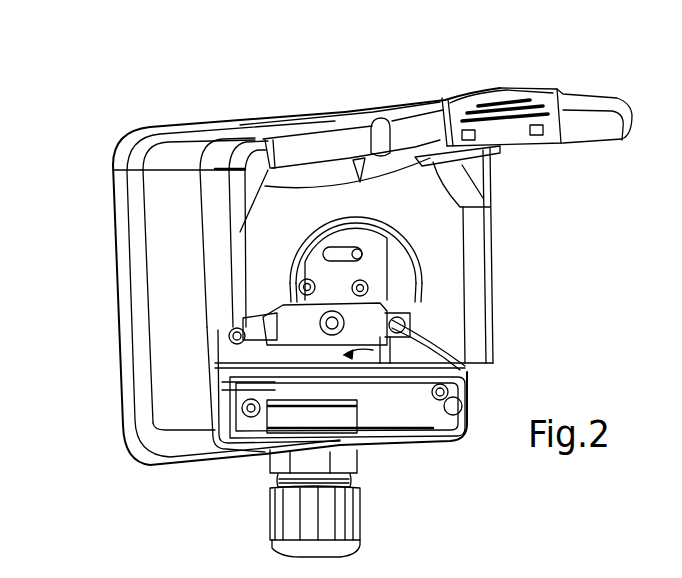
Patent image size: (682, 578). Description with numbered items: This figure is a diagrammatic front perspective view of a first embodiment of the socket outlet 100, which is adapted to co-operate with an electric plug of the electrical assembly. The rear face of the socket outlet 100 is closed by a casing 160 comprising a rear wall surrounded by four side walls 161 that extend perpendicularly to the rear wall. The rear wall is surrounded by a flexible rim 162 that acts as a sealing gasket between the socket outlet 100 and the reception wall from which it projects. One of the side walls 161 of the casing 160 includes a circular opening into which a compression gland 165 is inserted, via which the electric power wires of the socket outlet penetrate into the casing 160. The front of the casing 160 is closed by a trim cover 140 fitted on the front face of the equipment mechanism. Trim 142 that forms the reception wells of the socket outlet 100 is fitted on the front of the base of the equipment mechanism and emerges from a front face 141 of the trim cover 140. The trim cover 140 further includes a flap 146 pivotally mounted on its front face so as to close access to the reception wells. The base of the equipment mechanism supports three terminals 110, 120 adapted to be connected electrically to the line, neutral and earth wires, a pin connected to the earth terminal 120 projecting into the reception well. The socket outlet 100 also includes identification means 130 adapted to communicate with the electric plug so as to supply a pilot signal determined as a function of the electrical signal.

The socket outlet 100 is at (124, 90).
The terminals 110 is at (313, 280).
The earth terminal 120 is at (337, 252).
The identification means 130 is at (380, 425).
The trim cover 140 is at (217, 157).
The front face 141 is at (450, 313).
The trim 142 is at (410, 283).
The flap 146 is at (597, 120).
The casing 160 is at (157, 315).
The side walls 161 is at (188, 412).
The flexible rim 162 is at (193, 132).
The compression gland 165 is at (318, 510).